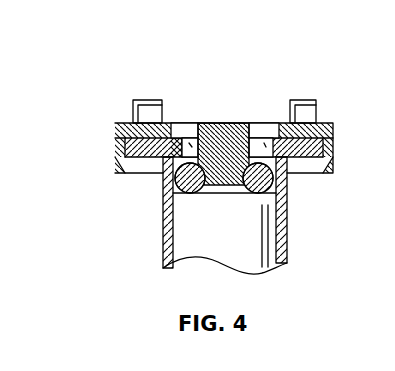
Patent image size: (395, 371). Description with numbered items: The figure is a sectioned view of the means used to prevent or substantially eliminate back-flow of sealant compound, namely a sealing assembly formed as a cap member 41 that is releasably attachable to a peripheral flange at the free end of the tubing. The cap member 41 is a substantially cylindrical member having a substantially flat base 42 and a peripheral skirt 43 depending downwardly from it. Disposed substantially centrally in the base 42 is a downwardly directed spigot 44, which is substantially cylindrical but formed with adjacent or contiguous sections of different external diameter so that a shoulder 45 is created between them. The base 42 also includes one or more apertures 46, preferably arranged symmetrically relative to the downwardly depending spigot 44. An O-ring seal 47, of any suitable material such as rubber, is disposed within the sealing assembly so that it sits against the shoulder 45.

The cap member 41 is at (86, 115).
The base 42 is at (164, 125).
The peripheral skirt 43 is at (118, 150).
The spigot 44 is at (235, 127).
The shoulder 45 is at (165, 195).
The apertures 46 is at (183, 128).
The O-ring seal 47 is at (266, 184).